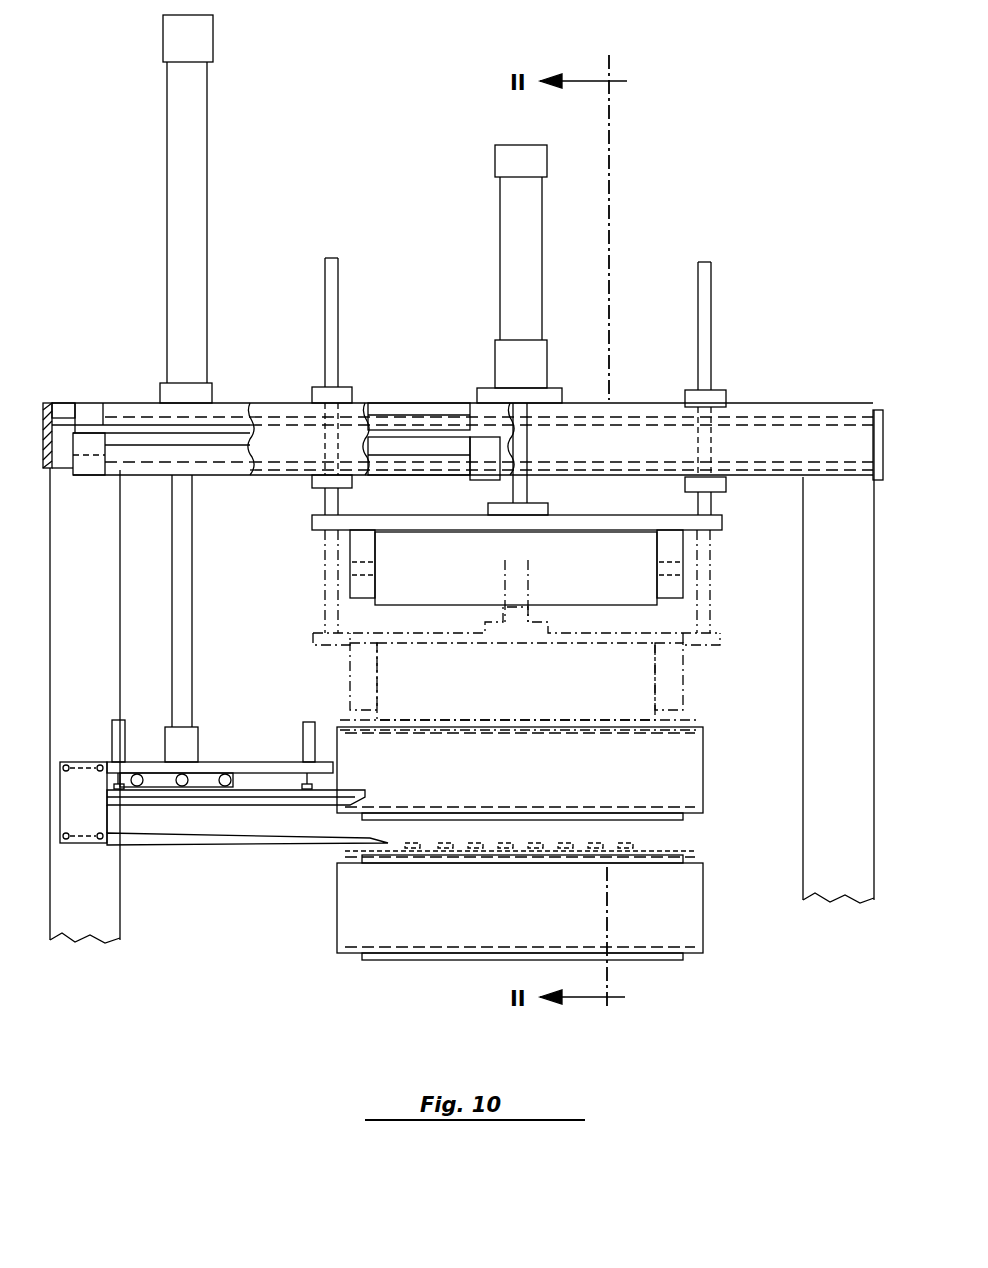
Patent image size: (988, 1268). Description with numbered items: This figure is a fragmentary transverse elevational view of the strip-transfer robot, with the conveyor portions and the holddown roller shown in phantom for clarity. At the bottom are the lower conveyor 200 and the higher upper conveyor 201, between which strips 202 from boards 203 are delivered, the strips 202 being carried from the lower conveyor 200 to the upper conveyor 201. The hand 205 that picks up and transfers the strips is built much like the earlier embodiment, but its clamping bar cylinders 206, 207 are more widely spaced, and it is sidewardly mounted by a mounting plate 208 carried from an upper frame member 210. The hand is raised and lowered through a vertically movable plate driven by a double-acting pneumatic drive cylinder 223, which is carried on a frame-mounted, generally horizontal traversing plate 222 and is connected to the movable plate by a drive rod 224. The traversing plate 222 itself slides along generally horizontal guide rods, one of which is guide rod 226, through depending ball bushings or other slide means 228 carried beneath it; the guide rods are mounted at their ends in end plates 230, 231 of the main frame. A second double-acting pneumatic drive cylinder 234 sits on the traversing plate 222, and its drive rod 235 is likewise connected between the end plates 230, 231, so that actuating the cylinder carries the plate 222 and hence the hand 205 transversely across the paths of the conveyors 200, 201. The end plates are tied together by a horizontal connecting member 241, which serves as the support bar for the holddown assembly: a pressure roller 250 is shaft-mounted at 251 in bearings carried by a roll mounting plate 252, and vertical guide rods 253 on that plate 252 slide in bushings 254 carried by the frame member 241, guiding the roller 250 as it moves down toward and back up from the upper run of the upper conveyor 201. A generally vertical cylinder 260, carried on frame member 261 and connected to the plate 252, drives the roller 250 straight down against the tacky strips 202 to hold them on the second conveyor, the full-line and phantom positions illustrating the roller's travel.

The lower conveyor 200 is at (703, 885).
The upper conveyor 201 is at (705, 775).
The strips 202 is at (547, 835).
The boards 203 is at (660, 860).
The hand 205 is at (240, 852).
The clamping bar cylinder 206 is at (118, 742).
The clamping bar cylinder 207 is at (307, 720).
The mounting plate 208 is at (205, 778).
The upper frame member 210 is at (145, 765).
The traversing plate 222 is at (412, 442).
The drive cylinder 223 is at (190, 168).
The drive rod 224 is at (188, 565).
The guide rod 226 is at (150, 468).
The slide means 228 is at (85, 468).
The end plate 230 is at (878, 410).
The end plate 231 is at (40, 432).
The drive cylinder 234 is at (382, 415).
The drive rod 235 is at (62, 408).
The horizontal connecting member 241 is at (285, 400).
The pressure roller 250 is at (638, 607).
The shaft mount 251 is at (348, 575).
The roll mounting plate 252 is at (718, 527).
The guide rods 253 is at (705, 330).
The bushings 254 is at (720, 482).
The cylinder 260 is at (515, 226).
The frame member 261 is at (540, 515).